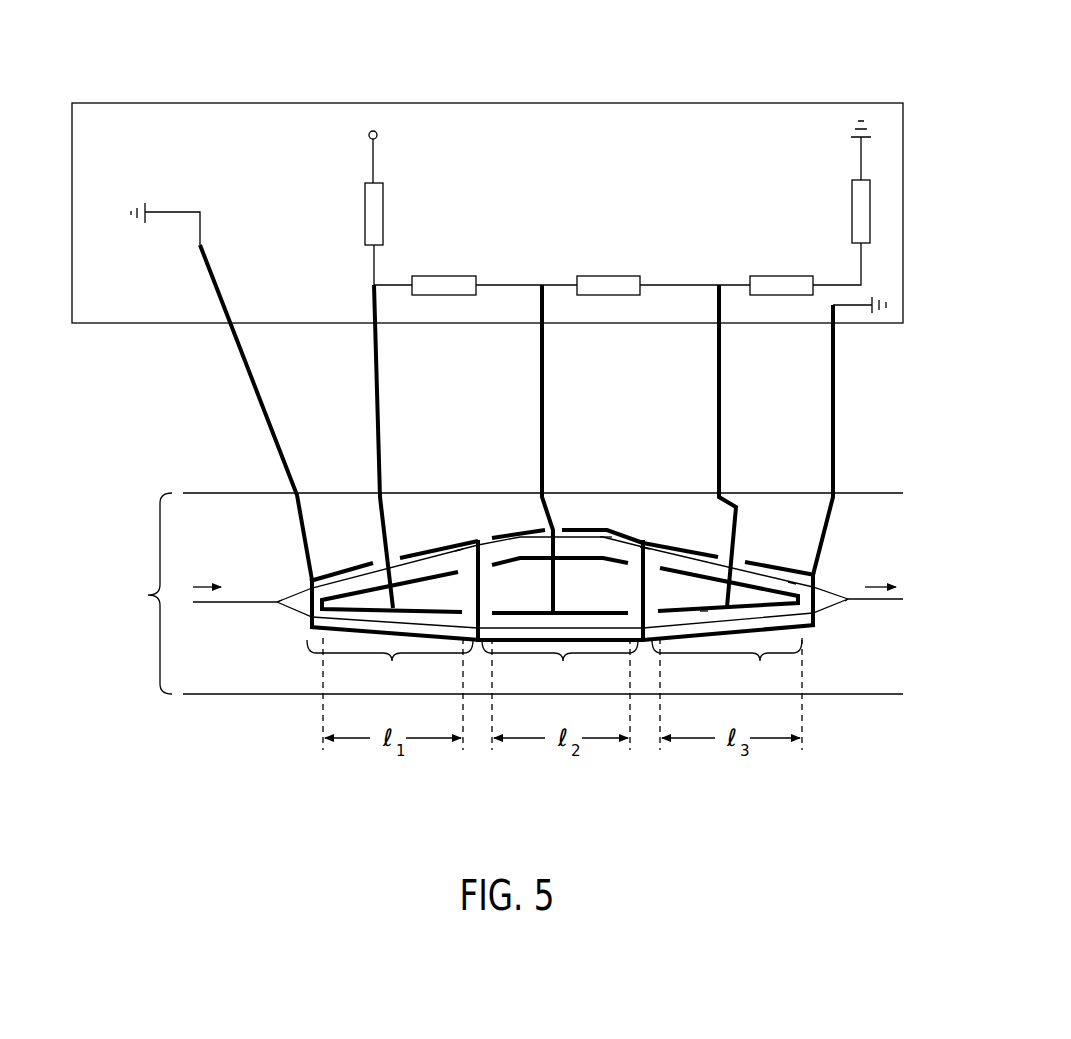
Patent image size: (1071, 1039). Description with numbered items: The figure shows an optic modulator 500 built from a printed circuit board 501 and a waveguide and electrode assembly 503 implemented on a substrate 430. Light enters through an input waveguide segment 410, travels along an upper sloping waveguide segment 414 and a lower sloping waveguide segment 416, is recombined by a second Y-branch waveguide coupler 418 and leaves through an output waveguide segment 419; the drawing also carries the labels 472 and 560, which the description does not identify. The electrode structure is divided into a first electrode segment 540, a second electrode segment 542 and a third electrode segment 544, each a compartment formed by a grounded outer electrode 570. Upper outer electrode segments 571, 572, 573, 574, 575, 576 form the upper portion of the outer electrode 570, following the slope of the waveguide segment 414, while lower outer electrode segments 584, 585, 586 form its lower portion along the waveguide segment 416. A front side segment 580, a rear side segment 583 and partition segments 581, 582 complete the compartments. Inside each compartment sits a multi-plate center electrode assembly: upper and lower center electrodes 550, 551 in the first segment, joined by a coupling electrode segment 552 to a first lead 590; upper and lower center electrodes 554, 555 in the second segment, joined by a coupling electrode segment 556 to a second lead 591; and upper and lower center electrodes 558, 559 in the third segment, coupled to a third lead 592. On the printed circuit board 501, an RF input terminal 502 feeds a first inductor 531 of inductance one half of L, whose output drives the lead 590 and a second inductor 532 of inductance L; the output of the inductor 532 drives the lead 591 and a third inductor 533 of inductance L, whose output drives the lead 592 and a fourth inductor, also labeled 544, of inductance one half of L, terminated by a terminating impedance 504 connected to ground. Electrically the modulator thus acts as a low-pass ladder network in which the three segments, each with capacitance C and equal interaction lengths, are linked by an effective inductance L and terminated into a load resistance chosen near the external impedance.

The optic modulator 500 is at (314, 48).
The printed circuit board 501 is at (705, 103).
The RF input terminal 502 is at (369, 135).
The waveguide and electrode assembly 503 is at (502, 593).
The terminating impedance 504 is at (850, 210).
The first inductor 531 is at (383, 204).
The second inductor 532 is at (456, 276).
The third inductor 533 is at (606, 276).
The third electrode segment 544 is at (783, 276).
The first lead 590 is at (378, 397).
The second lead 591 is at (544, 397).
The third lead 592 is at (720, 391).
The upper outer electrode segment 571 is at (317, 576).
The upper outer electrode segment 572 is at (458, 545).
The partition segment 581 is at (480, 550).
The upper outer electrode segment 574 is at (608, 527).
The partition segment 582 is at (648, 555).
The upper outer electrode segment 576 is at (793, 566).
The substrate 430 is at (850, 522).
The upper sloping waveguide segment 414 is at (346, 574).
The coupling electrode segment 552 is at (394, 556).
The upper outer electrode segment 573 is at (496, 535).
The coupling electrode segment 556 is at (559, 529).
The outer electrode 570 is at (622, 545).
The upper outer electrode segment 575 is at (694, 552).
The upper electrode segment 560 is at (739, 554).
The front side segment 580 is at (302, 596).
The rear side segment 583 is at (817, 587).
The upper center electrode 554 is at (498, 566).
The lower center electrode 555 is at (498, 612).
The upper center electrode 550 is at (458, 577).
The upper center electrode 558 is at (665, 573).
The input waveguide segment 410 is at (212, 605).
The leading edge 472 is at (277, 608).
The lower sloping waveguide segment 416 is at (393, 636).
The second Y-branch waveguide coupler 418 is at (848, 607).
The output waveguide segment 419 is at (883, 605).
The lower outer electrode segment 584 is at (324, 642).
The first electrode segment 540 is at (390, 667).
The lower center electrode 551 is at (428, 629).
The second electrode segment 542 is at (560, 694).
The lower outer electrode segment 585 is at (675, 640).
The lower center electrode 559 is at (704, 612).
The lower outer electrode segment 586 is at (816, 640).